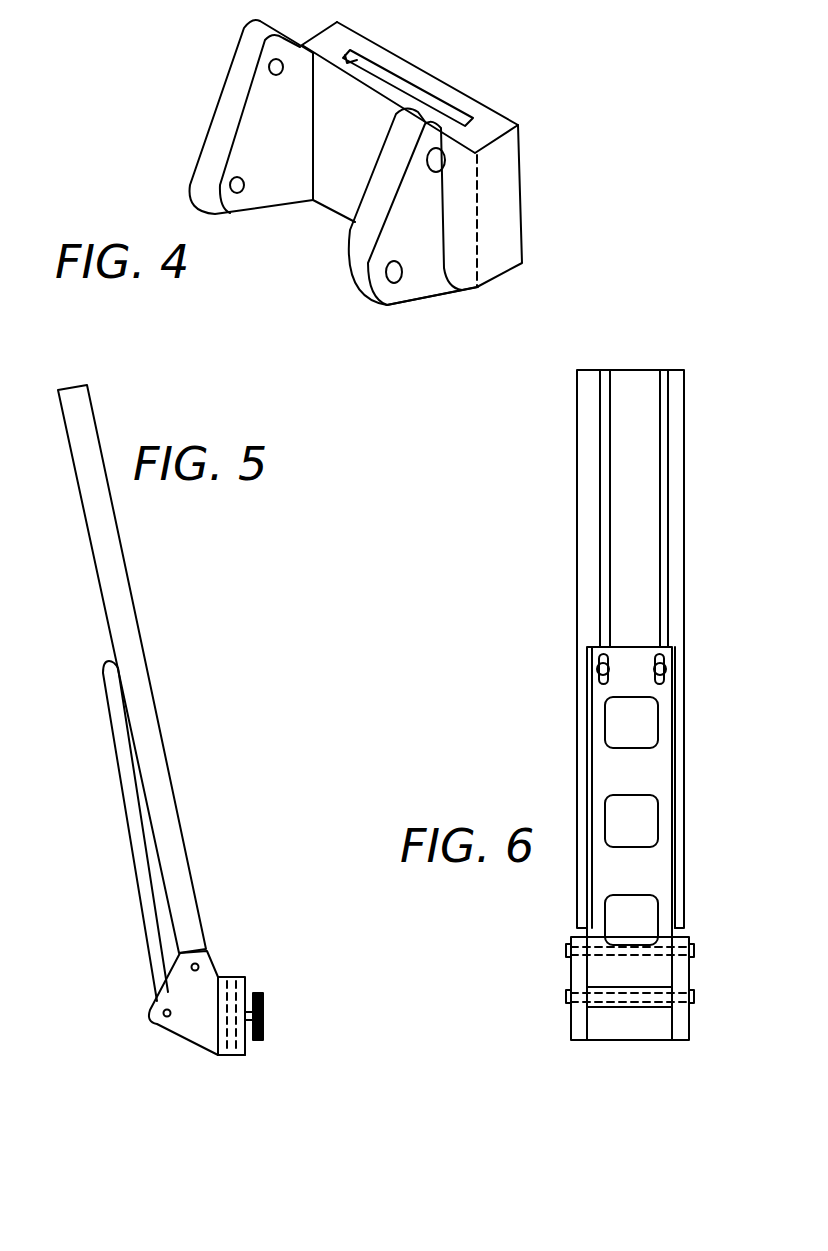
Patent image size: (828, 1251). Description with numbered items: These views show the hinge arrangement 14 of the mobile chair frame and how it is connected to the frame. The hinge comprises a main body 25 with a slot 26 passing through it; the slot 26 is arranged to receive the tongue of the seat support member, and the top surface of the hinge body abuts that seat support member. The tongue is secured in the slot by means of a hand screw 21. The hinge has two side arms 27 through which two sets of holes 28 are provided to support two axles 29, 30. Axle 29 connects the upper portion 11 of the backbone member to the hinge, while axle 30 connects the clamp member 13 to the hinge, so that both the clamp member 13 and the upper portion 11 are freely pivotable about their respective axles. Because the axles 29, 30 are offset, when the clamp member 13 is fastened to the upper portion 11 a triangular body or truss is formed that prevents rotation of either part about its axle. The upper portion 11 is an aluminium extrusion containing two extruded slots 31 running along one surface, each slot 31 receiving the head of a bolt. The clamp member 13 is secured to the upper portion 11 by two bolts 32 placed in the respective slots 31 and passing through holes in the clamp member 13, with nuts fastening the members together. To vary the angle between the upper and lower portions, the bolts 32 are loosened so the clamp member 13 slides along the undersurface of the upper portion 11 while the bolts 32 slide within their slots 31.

In FIG. 5, the upper portion 11 is at (100, 548).
In FIG. 6, the upper portion 11 is at (673, 378).
In FIG. 5, the clamp member 13 is at (113, 697).
In FIG. 6, the clamp member 13 is at (650, 565).
In FIG. 4, the hinge arrangement 14 is at (381, 188).
In FIG. 5, the hinge arrangement 14 is at (207, 968).
In FIG. 6, the hinge arrangement 14 is at (598, 1042).
In FIG. 5, the hand screw 21 is at (267, 1005).
In FIG. 4, the main body 25 is at (503, 192).
In FIG. 4, the slot 26 is at (373, 68).
In FIG. 5, the slot 26 is at (233, 1055).
In FIG. 4, the side arms 27 is at (203, 155).
In FIG. 4, the holes 28 is at (233, 177).
In FIG. 5, the axle 29 is at (205, 977).
In FIG. 6, the axle 29 is at (567, 950).
In FIG. 5, the axle 30 is at (166, 1008).
In FIG. 6, the axle 30 is at (565, 998).
In FIG. 6, the extruded slots 31 is at (600, 430).
In FIG. 6, the bolts 32 is at (667, 668).